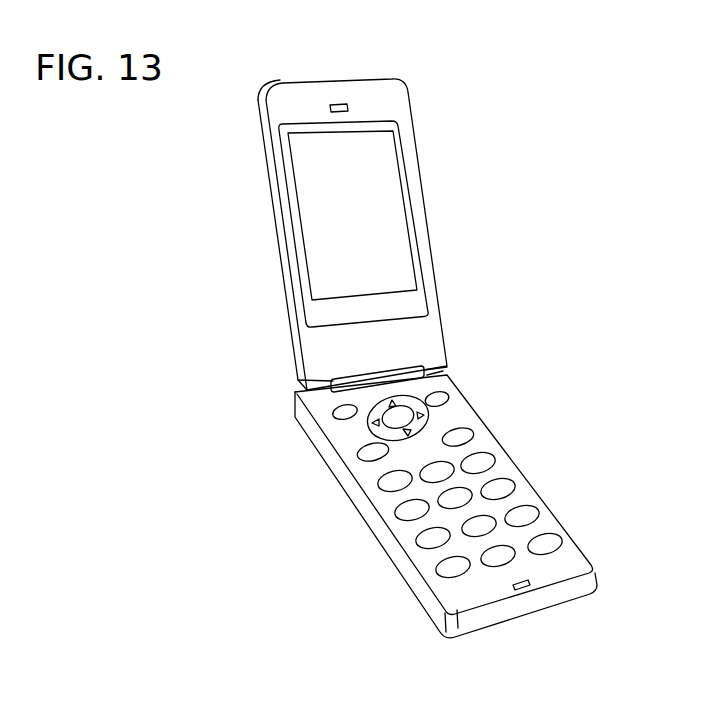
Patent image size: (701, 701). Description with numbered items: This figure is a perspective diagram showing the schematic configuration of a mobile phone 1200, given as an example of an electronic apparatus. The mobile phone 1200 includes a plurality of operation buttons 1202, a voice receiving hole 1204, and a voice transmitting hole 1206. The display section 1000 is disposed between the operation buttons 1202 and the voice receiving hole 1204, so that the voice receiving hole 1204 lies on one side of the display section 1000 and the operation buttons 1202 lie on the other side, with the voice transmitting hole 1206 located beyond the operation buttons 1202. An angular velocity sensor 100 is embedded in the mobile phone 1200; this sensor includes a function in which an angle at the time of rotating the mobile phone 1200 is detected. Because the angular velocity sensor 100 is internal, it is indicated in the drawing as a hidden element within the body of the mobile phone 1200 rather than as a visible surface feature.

The mobile phone 1200 is at (465, 109).
The display section 1000 is at (315, 184).
The voice receiving hole 1204 is at (343, 104).
The angular velocity sensor 100 is at (453, 417).
The operation buttons 1202 is at (512, 488).
The voice transmitting hole 1206 is at (530, 585).